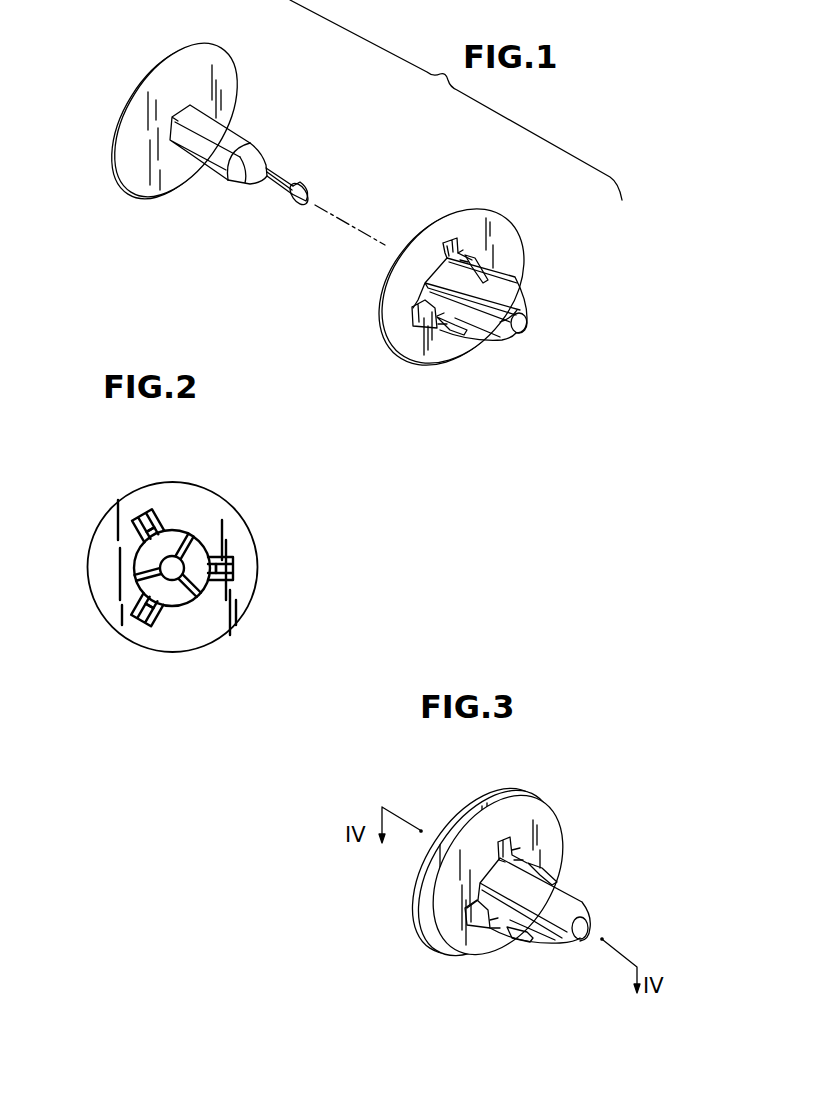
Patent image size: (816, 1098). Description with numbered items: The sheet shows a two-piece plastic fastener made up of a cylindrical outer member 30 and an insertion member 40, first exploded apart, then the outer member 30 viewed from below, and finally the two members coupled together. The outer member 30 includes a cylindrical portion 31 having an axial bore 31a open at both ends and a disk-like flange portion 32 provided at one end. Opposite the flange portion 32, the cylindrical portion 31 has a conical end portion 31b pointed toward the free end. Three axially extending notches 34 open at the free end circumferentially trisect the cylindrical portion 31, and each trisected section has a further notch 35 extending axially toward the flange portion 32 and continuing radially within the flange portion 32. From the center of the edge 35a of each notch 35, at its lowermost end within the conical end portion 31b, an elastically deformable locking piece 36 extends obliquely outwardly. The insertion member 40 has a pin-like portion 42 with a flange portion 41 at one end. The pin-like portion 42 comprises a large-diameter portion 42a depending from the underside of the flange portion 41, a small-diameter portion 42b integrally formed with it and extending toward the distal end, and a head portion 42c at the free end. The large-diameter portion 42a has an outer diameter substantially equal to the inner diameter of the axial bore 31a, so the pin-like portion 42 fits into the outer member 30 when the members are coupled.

In FIG. 1, the outer member 30 is at (473, 289).
In FIG. 2, the outer member 30 is at (169, 570).
In FIG. 3, the outer member 30 is at (530, 885).
In FIG. 1, the cylindrical portion 31 is at (500, 289).
In FIG. 2, the cylindrical portion 31 is at (167, 570).
In FIG. 1, the axial bore 31a is at (522, 328).
In FIG. 2, the axial bore 31a is at (176, 580).
In FIG. 1, the conical end portion 31b is at (517, 310).
In FIG. 2, the conical end portion 31b is at (137, 552).
In FIG. 1, the flange portion 32 is at (470, 217).
In FIG. 2, the flange portion 32 is at (227, 520).
In FIG. 1, the notches 34 is at (487, 313).
In FIG. 2, the notches 34 is at (185, 527).
In FIG. 1, the notch 35 is at (447, 247).
In FIG. 2, the notch 35 is at (143, 510).
In FIG. 3, the notch 35 is at (503, 840).
In FIG. 1, the edge of notch 35a is at (480, 270).
In FIG. 2, the edge of notch 35a is at (157, 510).
In FIG. 3, the edge of notch 35a is at (560, 877).
In FIG. 1, the locking piece 36 is at (488, 260).
In FIG. 2, the locking piece 36 is at (143, 535).
In FIG. 3, the locking piece 36 is at (543, 873).
In FIG. 1, the insertion member 40 is at (221, 128).
In FIG. 3, the insertion member 40 is at (469, 871).
In FIG. 1, the flange portion 41 is at (214, 48).
In FIG. 3, the flange portion 41 is at (460, 823).
In FIG. 1, the pin-like portion 42 is at (263, 171).
In FIG. 1, the large-diameter portion 42a is at (247, 143).
In FIG. 1, the small-diameter portion 42b is at (277, 200).
In FIG. 1, the head portion 42c is at (305, 186).